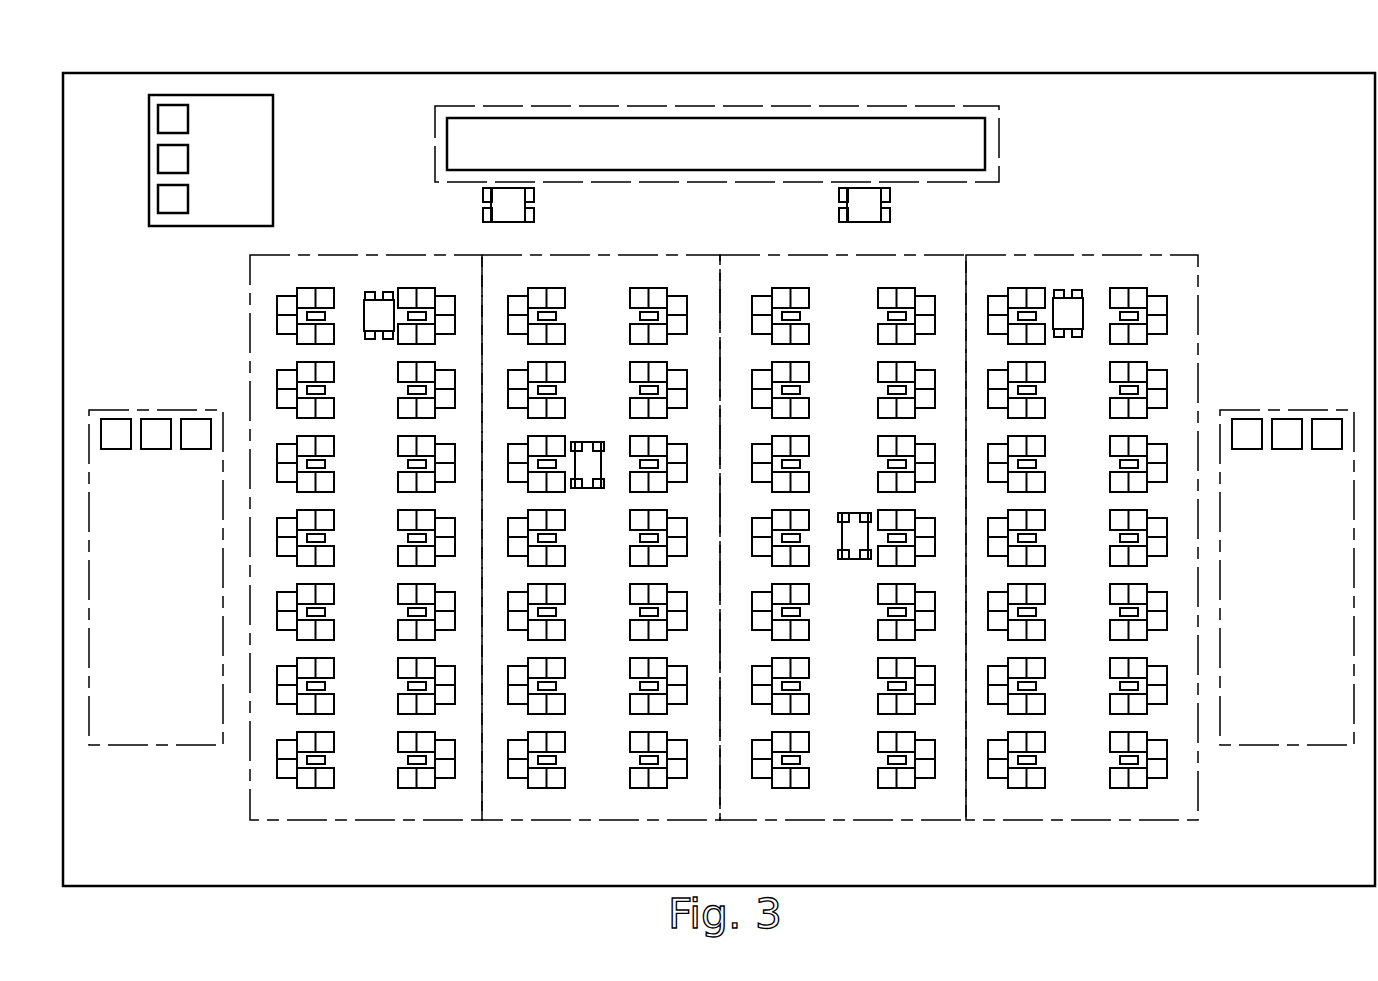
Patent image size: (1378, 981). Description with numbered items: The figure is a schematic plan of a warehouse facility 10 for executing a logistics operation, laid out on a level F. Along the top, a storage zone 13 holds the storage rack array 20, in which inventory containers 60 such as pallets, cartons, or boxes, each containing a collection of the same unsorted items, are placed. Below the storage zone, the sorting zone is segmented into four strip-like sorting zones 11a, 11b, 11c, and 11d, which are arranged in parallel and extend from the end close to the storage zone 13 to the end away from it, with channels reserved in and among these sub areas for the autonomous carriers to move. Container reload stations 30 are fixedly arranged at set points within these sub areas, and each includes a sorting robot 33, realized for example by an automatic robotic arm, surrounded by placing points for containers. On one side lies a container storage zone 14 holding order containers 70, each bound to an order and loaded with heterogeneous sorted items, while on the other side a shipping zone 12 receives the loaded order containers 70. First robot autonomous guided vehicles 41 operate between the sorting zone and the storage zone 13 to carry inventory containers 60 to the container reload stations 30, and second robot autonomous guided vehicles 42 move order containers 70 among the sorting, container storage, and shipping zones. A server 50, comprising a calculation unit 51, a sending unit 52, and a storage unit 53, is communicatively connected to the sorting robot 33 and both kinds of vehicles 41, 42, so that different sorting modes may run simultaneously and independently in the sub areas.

The warehouse facility 10 is at (1275, 68).
The level F is at (793, 92).
The storage zone 13 is at (963, 112).
The storage rack array 20 is at (978, 148).
The first robot autonomous guided vehicle 41 is at (521, 203).
The second robot autonomous guided vehicle 42 is at (588, 453).
The server 50 is at (263, 114).
The calculation unit 51 is at (165, 121).
The sending unit 52 is at (165, 163).
The storage unit 53 is at (165, 205).
The order container 70 is at (117, 425).
The container storage zone 14 is at (146, 743).
The shipping zone 12 is at (1297, 745).
The strip-like sorting zone 11a is at (376, 808).
The strip-like sorting zone 11b is at (608, 808).
The strip-like sorting zone 11c is at (846, 808).
The strip-like sorting zone 11d is at (1084, 808).
The container reload station 30 is at (266, 288).
The sorting robot 33 is at (797, 318).
The inventory container 60 is at (427, 294).